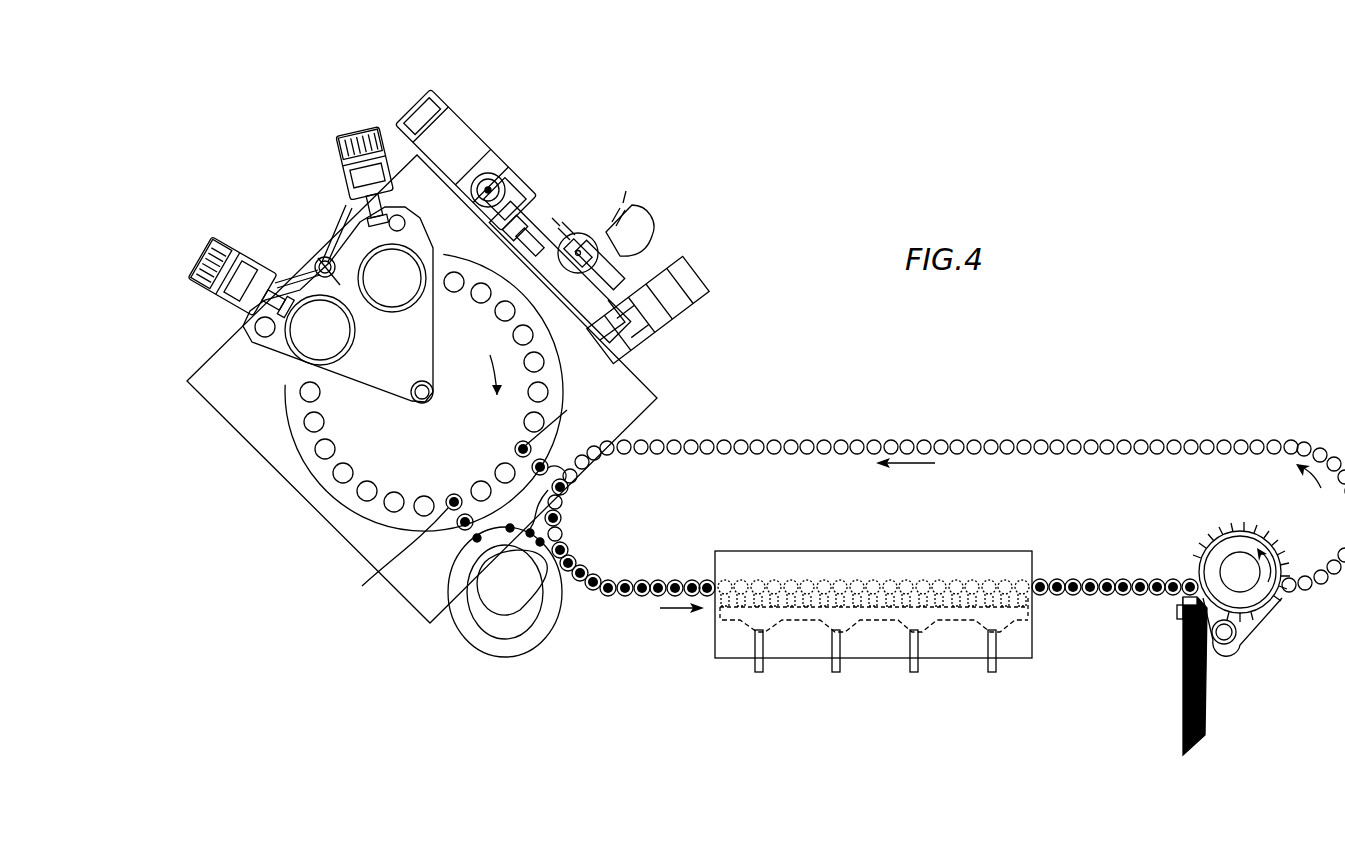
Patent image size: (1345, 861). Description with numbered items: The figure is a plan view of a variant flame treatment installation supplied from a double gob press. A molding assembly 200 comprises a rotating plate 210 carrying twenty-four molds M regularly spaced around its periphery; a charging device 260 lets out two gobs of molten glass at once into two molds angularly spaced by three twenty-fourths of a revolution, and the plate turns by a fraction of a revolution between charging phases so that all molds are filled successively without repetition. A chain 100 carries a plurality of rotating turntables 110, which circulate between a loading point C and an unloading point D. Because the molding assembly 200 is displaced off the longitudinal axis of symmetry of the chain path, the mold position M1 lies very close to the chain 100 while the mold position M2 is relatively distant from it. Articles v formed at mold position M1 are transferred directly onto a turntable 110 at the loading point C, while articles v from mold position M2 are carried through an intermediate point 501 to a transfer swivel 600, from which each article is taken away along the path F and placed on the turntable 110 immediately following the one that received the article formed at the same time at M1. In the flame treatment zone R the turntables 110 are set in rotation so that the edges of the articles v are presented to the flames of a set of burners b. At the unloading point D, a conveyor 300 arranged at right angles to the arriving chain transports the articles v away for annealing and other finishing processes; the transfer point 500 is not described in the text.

The chain 100 is at (973, 432).
The turntables 110 is at (808, 441).
The molding assembly 200 is at (276, 490).
The rotating plate 210 is at (490, 265).
The charging device 260 is at (320, 262).
The conveyor 300 is at (1182, 650).
The transfer point 500 is at (548, 470).
The intermediate point 501 is at (458, 528).
The transfer swivel 600 is at (510, 654).
The loading point C is at (562, 448).
The unloading point D is at (1183, 576).
The path F is at (527, 532).
The molds M is at (478, 300).
The mold position M1 is at (515, 443).
The mold position M2 is at (453, 492).
The flame treatment zone R is at (797, 657).
The burners b is at (752, 635).
The glass article v is at (643, 610).